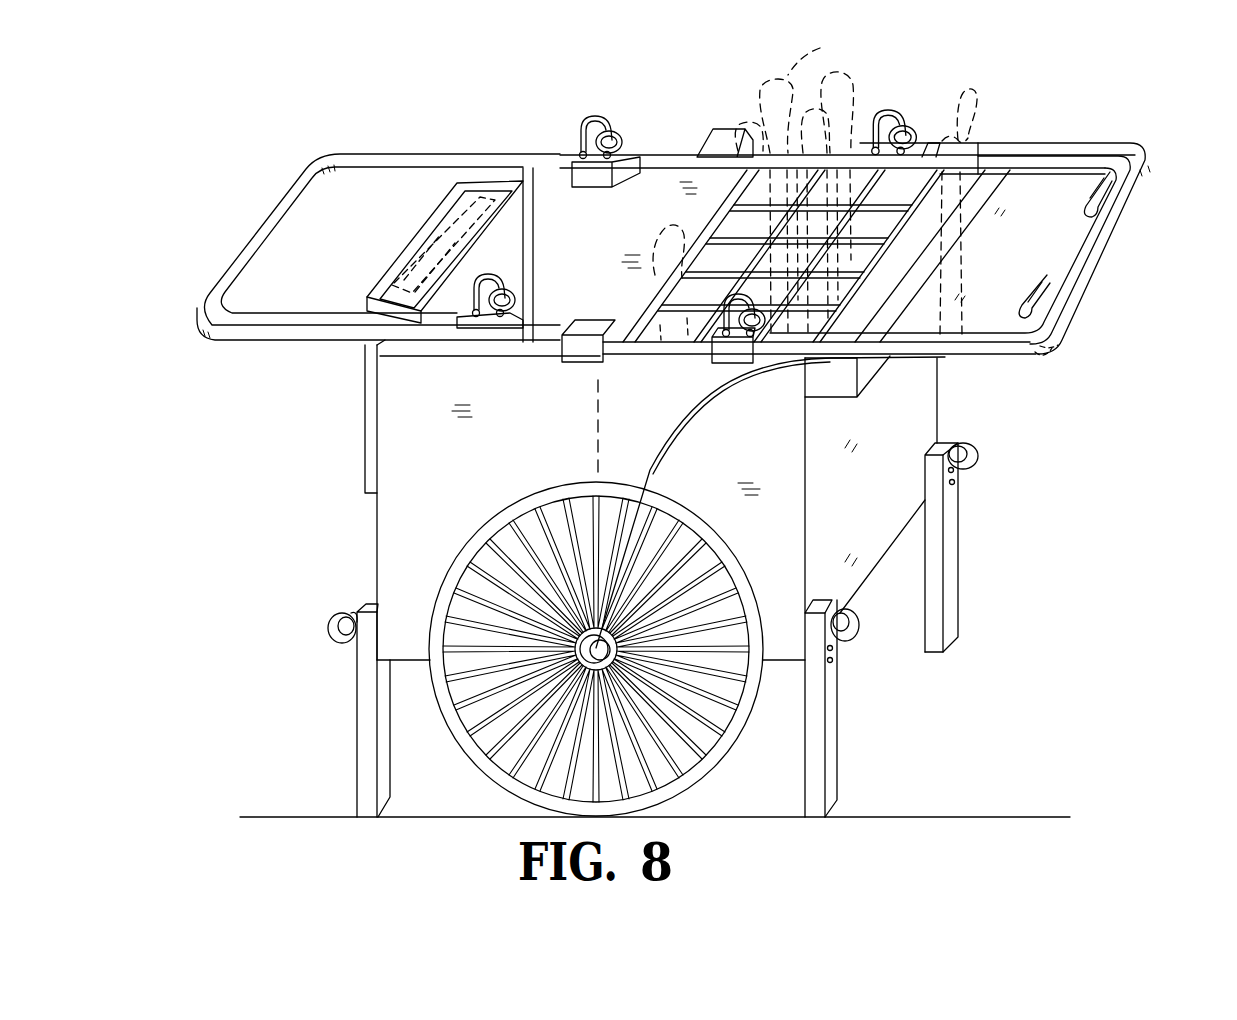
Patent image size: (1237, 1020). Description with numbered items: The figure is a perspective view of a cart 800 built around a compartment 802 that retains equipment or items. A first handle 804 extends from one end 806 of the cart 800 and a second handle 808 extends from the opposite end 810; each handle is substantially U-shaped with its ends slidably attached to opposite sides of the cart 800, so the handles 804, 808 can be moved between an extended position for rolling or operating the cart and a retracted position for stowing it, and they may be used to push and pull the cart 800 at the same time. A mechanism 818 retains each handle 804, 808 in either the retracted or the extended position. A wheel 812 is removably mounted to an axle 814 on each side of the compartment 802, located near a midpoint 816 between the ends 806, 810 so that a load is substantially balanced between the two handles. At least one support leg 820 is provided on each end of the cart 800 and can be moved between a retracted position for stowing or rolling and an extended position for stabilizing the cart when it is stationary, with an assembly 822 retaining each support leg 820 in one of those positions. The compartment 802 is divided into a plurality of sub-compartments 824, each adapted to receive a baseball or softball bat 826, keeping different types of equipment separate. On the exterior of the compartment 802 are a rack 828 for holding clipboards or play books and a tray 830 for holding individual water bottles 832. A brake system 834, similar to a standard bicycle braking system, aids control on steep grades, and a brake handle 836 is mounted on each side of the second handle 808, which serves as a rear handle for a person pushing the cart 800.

The cart 800 is at (620, 71).
The compartment 802 is at (673, 180).
The first handle 804 is at (372, 153).
The one end 806 is at (377, 512).
The second handle 808 is at (1093, 270).
The opposite end 810 is at (893, 504).
The wheel 812 is at (490, 772).
The axle 814 is at (527, 530).
The midpoint 816 is at (598, 437).
The mechanism 818 is at (576, 110).
The support leg 820 is at (363, 720).
The assembly 822 is at (318, 612).
The sub-compartments 824 is at (645, 306).
The baseball or softball bat 826 is at (755, 178).
The rack 828 is at (363, 310).
The tray 830 is at (973, 233).
The water bottles 832 is at (978, 128).
The brake system 834 is at (1030, 368).
The brake handle 836 is at (1080, 192).